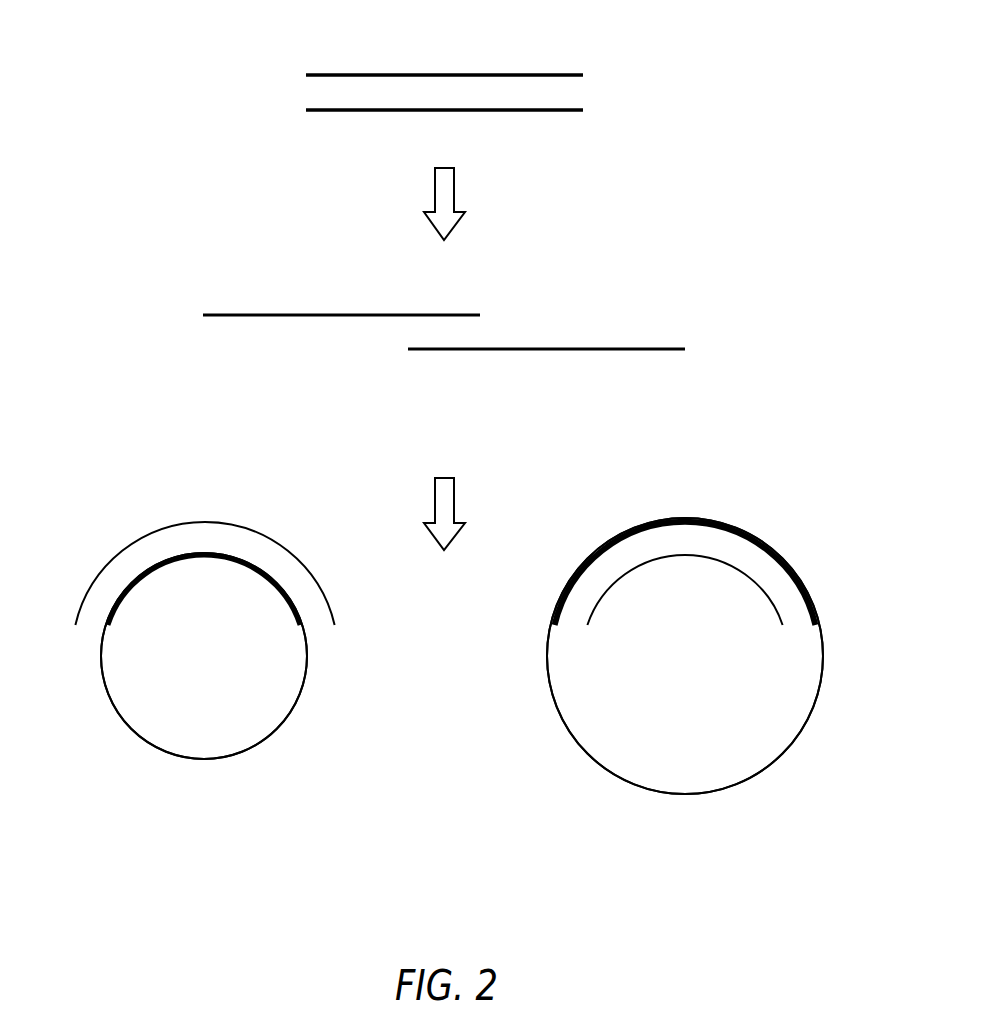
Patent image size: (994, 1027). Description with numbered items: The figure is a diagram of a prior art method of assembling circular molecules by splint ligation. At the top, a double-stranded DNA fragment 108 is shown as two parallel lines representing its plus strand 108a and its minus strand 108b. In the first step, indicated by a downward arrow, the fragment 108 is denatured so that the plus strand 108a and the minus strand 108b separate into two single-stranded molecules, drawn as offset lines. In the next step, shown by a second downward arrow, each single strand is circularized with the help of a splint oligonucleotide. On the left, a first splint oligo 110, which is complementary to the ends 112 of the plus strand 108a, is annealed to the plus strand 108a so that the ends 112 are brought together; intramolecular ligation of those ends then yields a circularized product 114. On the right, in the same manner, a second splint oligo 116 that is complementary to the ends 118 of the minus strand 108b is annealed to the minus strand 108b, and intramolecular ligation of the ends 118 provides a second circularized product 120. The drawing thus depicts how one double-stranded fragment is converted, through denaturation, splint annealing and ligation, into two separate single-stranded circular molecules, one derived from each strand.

The double-stranded DNA fragment 108 is at (583, 42).
The plus strand 108a is at (457, 73).
The minus strand 108b is at (478, 112).
The first splint oligo 110 is at (300, 560).
The ends of the plus strand 112 is at (128, 590).
The circularized product 114 is at (128, 773).
The second splint oligo 116 is at (598, 600).
The ends of the minus strand 118 is at (753, 538).
The circularized product 120 is at (598, 788).